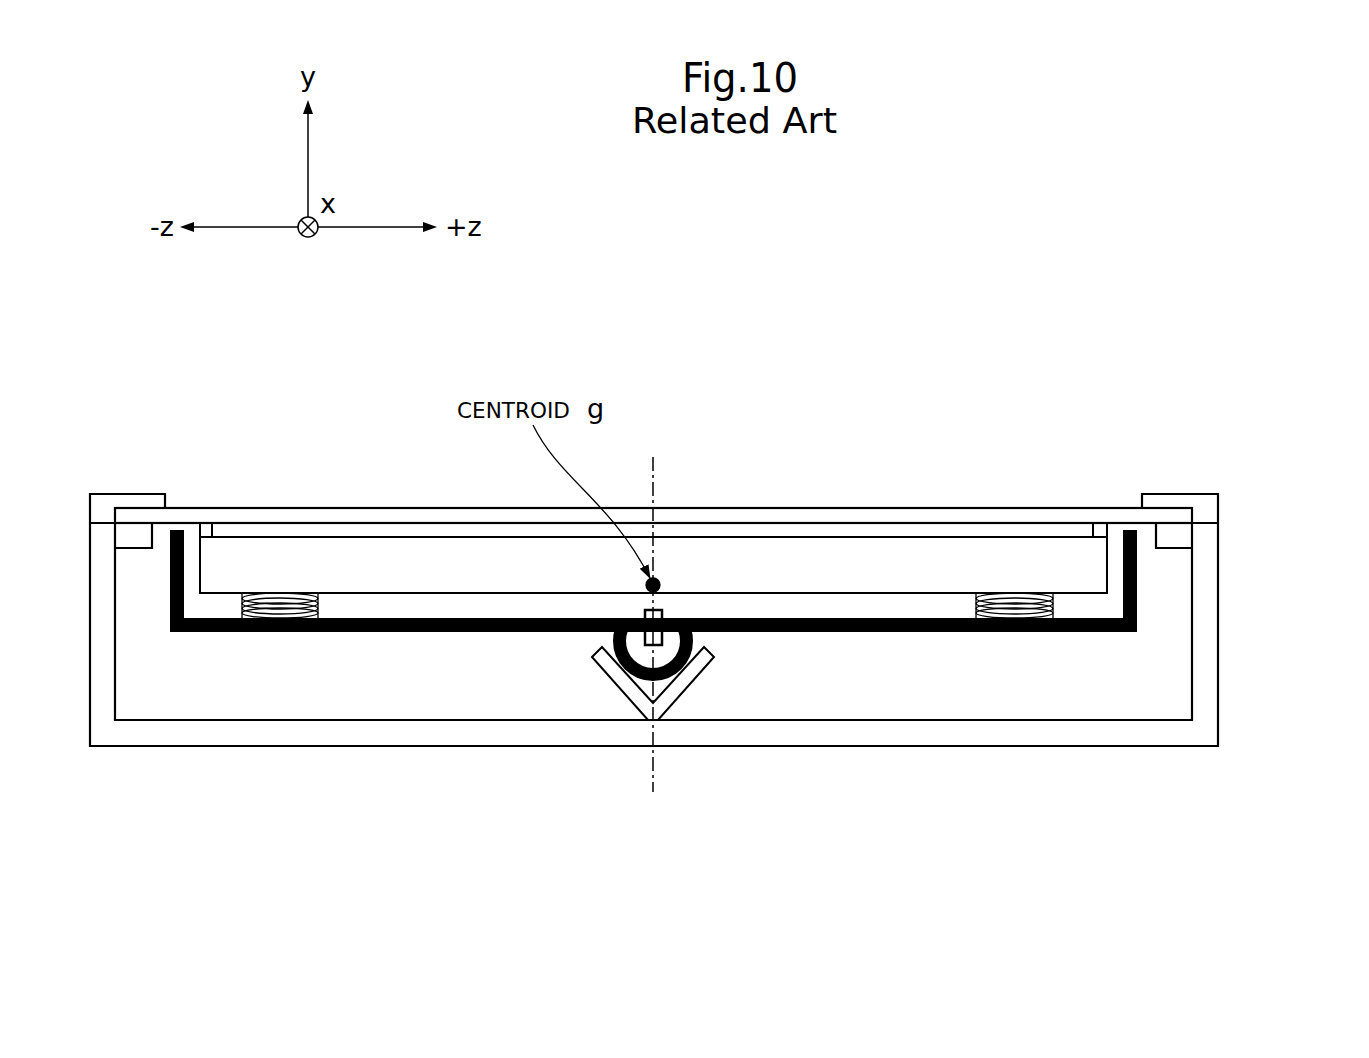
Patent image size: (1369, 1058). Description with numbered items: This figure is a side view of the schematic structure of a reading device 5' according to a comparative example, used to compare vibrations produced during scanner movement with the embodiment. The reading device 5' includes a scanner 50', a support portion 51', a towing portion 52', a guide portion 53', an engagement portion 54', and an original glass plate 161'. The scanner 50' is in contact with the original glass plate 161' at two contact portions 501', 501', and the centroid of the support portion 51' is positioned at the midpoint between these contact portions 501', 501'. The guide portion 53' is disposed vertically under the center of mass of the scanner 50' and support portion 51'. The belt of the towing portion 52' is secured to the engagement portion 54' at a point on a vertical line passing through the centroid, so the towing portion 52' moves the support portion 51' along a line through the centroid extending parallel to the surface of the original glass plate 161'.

The reading device 5' is at (721, 592).
The original glass plate 161' is at (653, 421).
The scanner 50' is at (653, 494).
The contact portions 501' is at (645, 466).
The support portion 51' is at (653, 679).
The towing portion 52' is at (726, 720).
The guide portion 53' is at (619, 751).
The engagement portion 54' is at (691, 754).